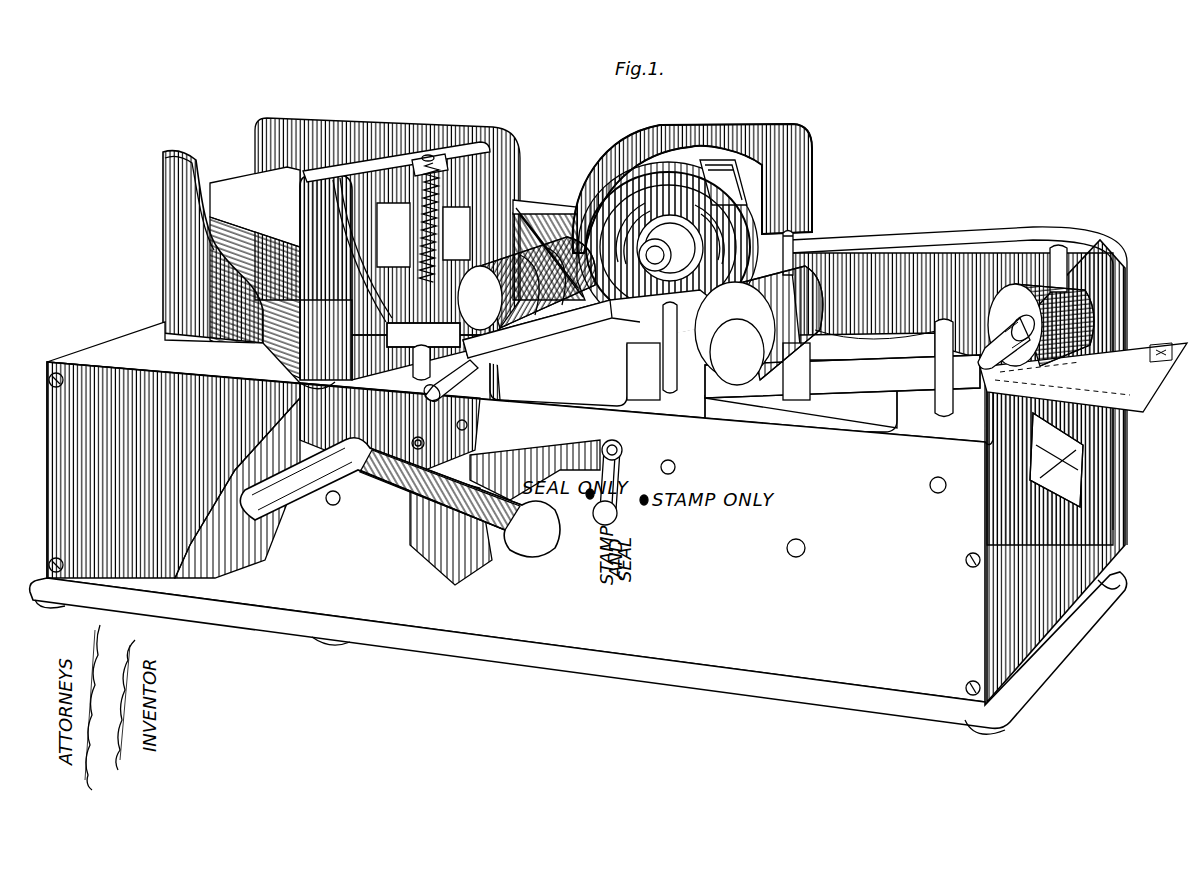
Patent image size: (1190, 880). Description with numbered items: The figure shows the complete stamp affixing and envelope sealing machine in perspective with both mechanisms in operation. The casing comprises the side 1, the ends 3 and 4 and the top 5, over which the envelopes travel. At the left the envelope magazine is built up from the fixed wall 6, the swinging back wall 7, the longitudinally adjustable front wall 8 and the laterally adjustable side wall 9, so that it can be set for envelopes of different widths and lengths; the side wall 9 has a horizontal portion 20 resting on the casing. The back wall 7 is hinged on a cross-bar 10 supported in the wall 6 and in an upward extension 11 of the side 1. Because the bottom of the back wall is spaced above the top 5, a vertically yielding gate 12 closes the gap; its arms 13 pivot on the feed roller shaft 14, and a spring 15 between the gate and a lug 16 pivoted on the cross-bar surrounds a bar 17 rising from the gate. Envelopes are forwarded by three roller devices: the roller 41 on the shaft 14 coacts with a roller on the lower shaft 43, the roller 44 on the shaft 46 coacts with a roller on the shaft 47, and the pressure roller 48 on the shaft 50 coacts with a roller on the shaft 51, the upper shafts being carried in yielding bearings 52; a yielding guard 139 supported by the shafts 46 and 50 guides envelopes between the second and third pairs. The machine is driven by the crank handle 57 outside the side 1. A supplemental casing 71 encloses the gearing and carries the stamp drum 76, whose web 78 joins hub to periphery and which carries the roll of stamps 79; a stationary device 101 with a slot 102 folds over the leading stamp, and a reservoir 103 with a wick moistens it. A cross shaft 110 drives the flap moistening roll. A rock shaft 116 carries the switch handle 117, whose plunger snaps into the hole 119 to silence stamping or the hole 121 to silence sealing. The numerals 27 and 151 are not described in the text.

The side 1 is at (516, 532).
The end 3 is at (95, 352).
The end 4 is at (1005, 600).
The top 5 is at (516, 377).
The fixed wall 6 is at (360, 130).
The swinging back wall 7 is at (470, 212).
The longitudinally adjustable front wall 8 is at (240, 143).
The laterally adjustable side wall 9 is at (165, 265).
The cross-bar 10 is at (468, 155).
The upward extension 11 is at (308, 212).
The vertically yielding gate 12 is at (445, 308).
The arms 13 is at (545, 245).
The feed roller shaft 14 is at (425, 386).
The spring 15 is at (440, 190).
The lug 16 is at (430, 155).
The bar 17 is at (440, 165).
The horizontal portion 20 is at (325, 386).
The pin hole 27 is at (341, 500).
The roller 41 is at (527, 283).
The shaft 43 is at (415, 440).
The roller 44 is at (759, 323).
The shaft 46 is at (737, 352).
The shaft 47 is at (676, 466).
The roller 48 is at (1041, 324).
The shaft 50 is at (1008, 338).
The shaft 51 is at (934, 492).
The yielding bearings 52 is at (800, 240).
The crank handle 57 is at (275, 508).
The supplemental casing 71 is at (927, 228).
The stamp drum 76 is at (670, 221).
The web 78 is at (668, 247).
The roll of stamps 79 is at (670, 248).
The stationary device 101 is at (720, 160).
The slot 102 is at (752, 178).
The reservoir 103 is at (601, 330).
The cross shaft 110 is at (806, 551).
The rock shaft 116 is at (615, 445).
The switch handle 117 is at (620, 475).
The hole 119 is at (590, 490).
The hole 121 is at (648, 500).
The yielding guard 139 is at (830, 365).
The plate 151 is at (870, 345).